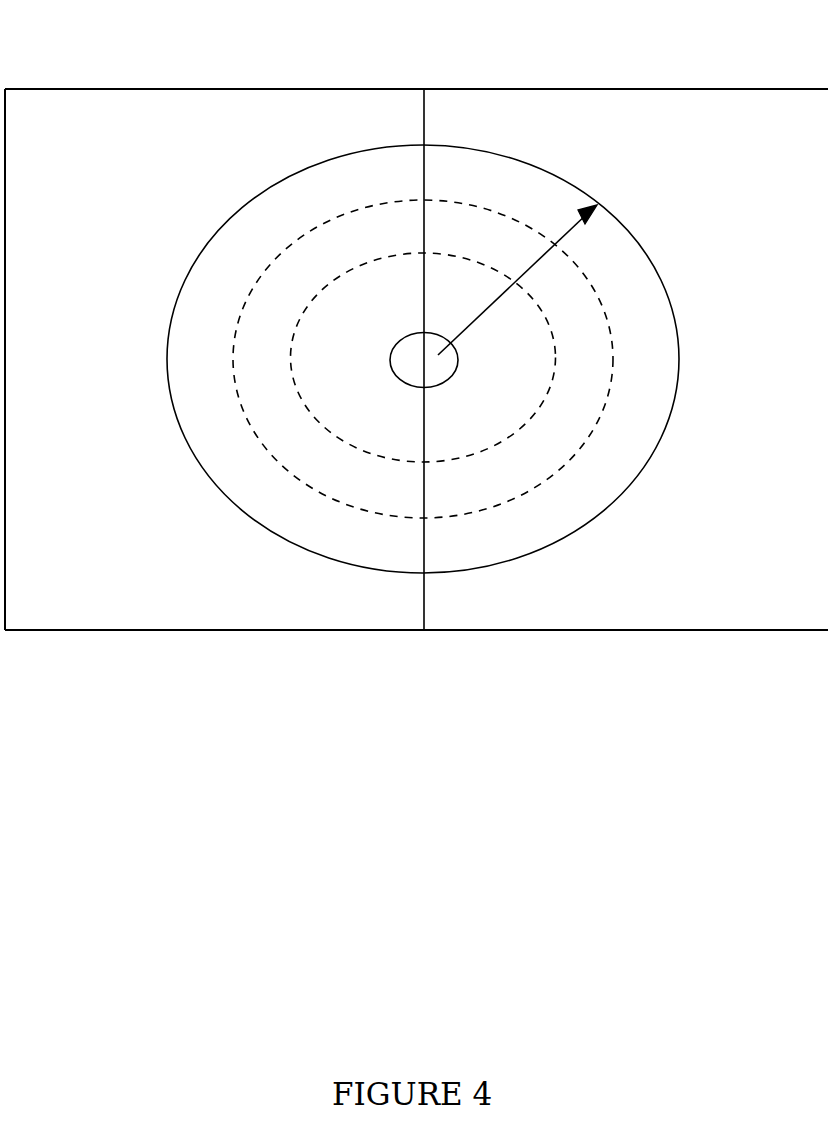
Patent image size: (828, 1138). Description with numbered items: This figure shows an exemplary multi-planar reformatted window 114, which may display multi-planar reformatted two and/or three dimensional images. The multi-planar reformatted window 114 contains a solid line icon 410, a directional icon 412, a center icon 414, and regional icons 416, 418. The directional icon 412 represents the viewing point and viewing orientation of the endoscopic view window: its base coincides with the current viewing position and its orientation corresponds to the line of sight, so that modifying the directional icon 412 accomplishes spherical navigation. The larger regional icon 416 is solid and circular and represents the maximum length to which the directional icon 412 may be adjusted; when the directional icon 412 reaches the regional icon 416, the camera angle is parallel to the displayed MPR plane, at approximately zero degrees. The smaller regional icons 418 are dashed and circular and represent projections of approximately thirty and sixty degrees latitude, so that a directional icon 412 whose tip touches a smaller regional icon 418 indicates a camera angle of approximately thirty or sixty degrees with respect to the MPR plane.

The multi-planar reformatted window 114 is at (625, 75).
The solid line icon 410 is at (425, 602).
The directional icon 412 is at (573, 230).
The center icon 414 is at (392, 369).
The larger regional icon 416 is at (653, 457).
The smaller regional icon 418 is at (615, 351).